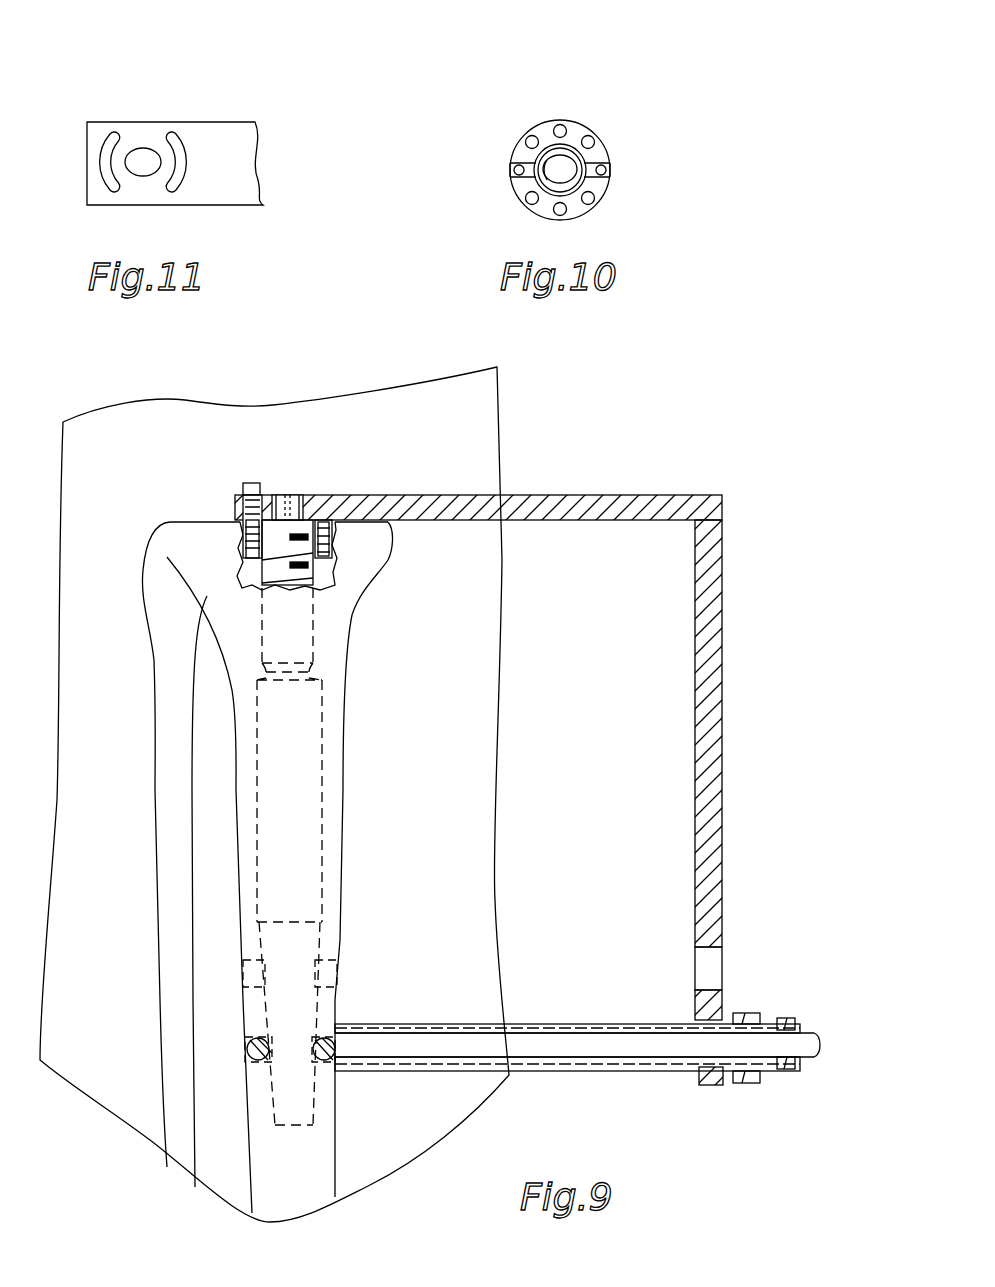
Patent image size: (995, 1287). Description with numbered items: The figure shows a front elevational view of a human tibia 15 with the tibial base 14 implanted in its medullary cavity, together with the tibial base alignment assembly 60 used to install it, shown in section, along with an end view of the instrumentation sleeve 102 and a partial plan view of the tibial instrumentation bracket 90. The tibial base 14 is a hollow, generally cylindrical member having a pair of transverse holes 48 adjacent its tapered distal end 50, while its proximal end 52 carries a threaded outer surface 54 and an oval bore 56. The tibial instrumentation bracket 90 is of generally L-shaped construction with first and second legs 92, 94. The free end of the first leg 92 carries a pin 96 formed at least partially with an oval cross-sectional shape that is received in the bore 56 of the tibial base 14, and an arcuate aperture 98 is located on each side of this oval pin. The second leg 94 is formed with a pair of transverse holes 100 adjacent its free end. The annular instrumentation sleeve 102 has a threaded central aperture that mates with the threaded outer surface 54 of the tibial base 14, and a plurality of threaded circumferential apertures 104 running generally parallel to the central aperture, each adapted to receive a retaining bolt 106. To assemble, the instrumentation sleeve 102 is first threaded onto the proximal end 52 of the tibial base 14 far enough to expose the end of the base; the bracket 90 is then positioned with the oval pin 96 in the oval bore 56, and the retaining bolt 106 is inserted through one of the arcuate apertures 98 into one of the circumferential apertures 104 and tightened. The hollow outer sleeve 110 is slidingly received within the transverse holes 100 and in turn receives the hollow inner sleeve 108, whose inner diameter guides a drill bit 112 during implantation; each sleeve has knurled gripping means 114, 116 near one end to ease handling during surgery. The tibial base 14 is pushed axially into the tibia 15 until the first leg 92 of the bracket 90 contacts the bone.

In FIG. 9, the tibial base 14 is at (315, 790).
In FIG. 9, the tibia 15 is at (330, 887).
In FIG. 9, the transverse holes 48 is at (320, 978).
In FIG. 9, the tapered distal end 50 is at (293, 1117).
In FIG. 10, the proximal end 52 is at (598, 197).
In FIG. 9, the threaded outer surface 54 is at (337, 585).
In FIG. 10, the bore 56 is at (543, 150).
In FIG. 9, the tibial base alignment assembly 60 is at (275, 488).
In FIG. 11, the tibial instrumentation bracket 90 is at (275, 156).
In FIG. 9, the tibial instrumentation bracket 90 is at (553, 744).
In FIG. 11, the first leg 92 is at (212, 192).
In FIG. 9, the first leg 92 is at (595, 495).
In FIG. 9, the second leg 94 is at (718, 675).
In FIG. 11, the pin 96 is at (143, 156).
In FIG. 9, the pin 96 is at (302, 493).
In FIG. 11, the arcuate aperture 98 is at (107, 140).
In FIG. 9, the transverse holes 100 is at (712, 952).
In FIG. 10, the instrumentation sleeve 102 is at (605, 147).
In FIG. 10, the circumferential apertures 104 is at (560, 128).
In FIG. 9, the retaining bolt 106 is at (255, 482).
In FIG. 9, the inner sleeve 108 is at (530, 1025).
In FIG. 9, the outer sleeve 110 is at (607, 1025).
In FIG. 9, the drill bit 112 is at (573, 1050).
In FIG. 9, the knurled gripping means 114 is at (795, 1022).
In FIG. 9, the knurled gripping means 116 is at (740, 1013).